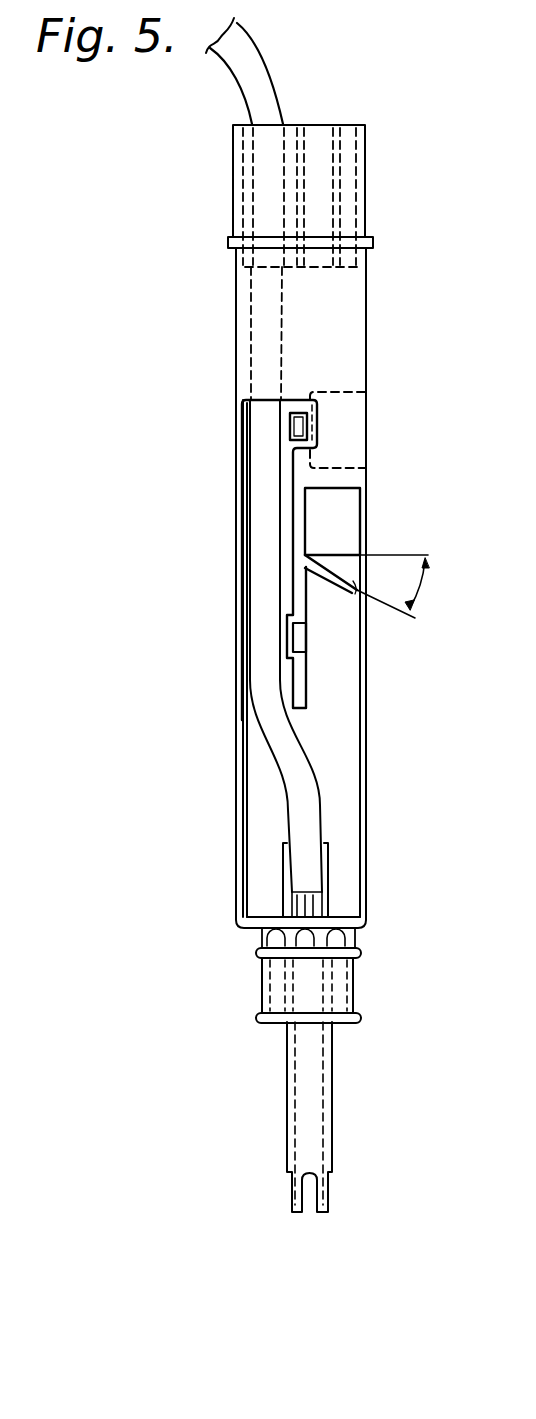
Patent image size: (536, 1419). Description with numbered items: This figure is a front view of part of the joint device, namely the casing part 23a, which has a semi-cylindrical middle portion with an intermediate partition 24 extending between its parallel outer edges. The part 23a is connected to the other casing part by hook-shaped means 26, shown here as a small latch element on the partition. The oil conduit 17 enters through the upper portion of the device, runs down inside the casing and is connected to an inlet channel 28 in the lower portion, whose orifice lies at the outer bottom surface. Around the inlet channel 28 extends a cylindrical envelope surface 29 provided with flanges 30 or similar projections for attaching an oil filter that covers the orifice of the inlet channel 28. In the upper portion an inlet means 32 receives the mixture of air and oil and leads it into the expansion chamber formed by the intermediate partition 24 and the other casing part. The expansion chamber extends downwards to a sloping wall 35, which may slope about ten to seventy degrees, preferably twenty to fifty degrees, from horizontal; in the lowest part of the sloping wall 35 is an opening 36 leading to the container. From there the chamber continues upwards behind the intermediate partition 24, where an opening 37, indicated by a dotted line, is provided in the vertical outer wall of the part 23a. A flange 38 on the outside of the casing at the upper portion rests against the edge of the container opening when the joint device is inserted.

The oil conduit 17 is at (253, 73).
The casing part 23a is at (220, 337).
The intermediate partition 24 is at (333, 335).
The hook-shaped means 26 is at (292, 425).
The inlet channel 28 is at (298, 902).
The cylindrical envelope surface 29 is at (261, 983).
The flanges 30 is at (357, 1018).
The inlet means 32 is at (323, 167).
The sloping wall 35 is at (328, 573).
The opening 36 is at (367, 545).
The opening 37 is at (345, 437).
The flange 38 is at (373, 243).